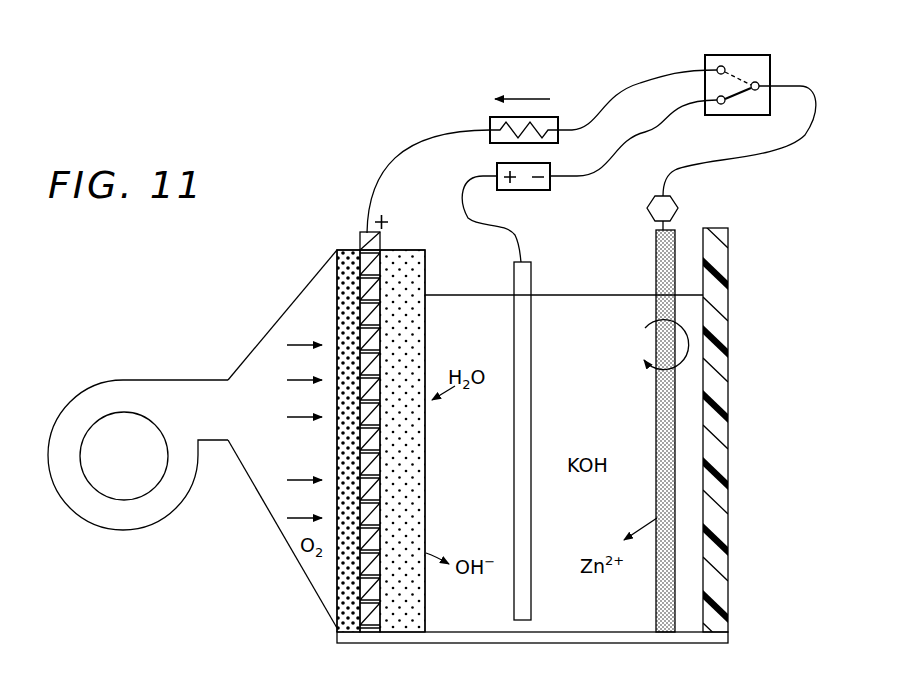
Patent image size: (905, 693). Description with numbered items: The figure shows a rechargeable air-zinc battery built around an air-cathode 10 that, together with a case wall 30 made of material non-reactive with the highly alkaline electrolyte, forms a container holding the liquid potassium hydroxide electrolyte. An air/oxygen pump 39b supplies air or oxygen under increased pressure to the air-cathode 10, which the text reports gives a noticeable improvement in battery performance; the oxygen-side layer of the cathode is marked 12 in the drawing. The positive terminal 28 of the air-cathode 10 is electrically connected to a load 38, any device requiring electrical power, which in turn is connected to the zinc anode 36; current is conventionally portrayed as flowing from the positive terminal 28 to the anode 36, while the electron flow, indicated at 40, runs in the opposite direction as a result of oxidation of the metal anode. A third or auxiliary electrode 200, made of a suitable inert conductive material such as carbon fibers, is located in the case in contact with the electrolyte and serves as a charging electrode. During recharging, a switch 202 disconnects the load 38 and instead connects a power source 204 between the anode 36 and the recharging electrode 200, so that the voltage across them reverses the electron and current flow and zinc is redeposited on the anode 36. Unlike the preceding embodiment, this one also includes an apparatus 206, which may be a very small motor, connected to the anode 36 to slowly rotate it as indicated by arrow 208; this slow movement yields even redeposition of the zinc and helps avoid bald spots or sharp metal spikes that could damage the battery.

The air-cathode 10 is at (246, 334).
The air cathode 12 is at (342, 602).
The positive terminal 28 is at (364, 232).
The case wall 30 is at (729, 430).
The anode 36 is at (657, 243).
The load 38 is at (558, 133).
The air/oxygen pump 39b is at (100, 515).
The electron flow 40 is at (549, 99).
The third or auxiliary electrode 200 is at (520, 456).
The switch 202 is at (750, 63).
The power source 204 is at (540, 190).
The apparatus for moving the anode 206 is at (670, 207).
The arrow 208 is at (645, 328).